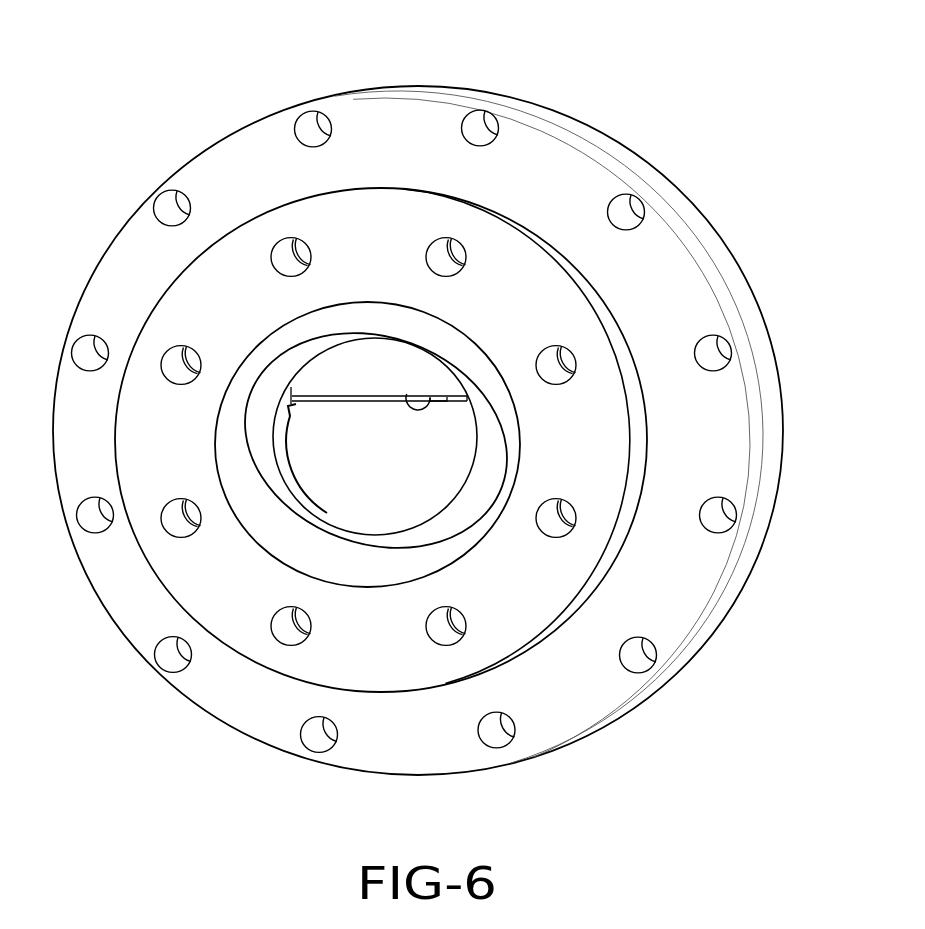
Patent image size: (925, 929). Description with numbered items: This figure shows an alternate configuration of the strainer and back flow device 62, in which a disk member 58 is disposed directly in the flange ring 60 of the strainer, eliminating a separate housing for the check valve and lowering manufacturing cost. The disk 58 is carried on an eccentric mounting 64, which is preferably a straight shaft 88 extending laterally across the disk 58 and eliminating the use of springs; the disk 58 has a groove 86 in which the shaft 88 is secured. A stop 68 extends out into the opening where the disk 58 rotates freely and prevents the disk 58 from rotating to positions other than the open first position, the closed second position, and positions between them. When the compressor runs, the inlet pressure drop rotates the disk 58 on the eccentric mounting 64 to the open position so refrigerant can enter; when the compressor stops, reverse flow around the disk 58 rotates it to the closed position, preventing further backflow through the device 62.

The device 62 is at (186, 130).
The flange ring 60 is at (386, 636).
The disk member 58 is at (400, 479).
The eccentric mounting 64 is at (293, 393).
The stop 68 is at (327, 518).
The groove 86 is at (407, 394).
The shaft 88 is at (432, 398).